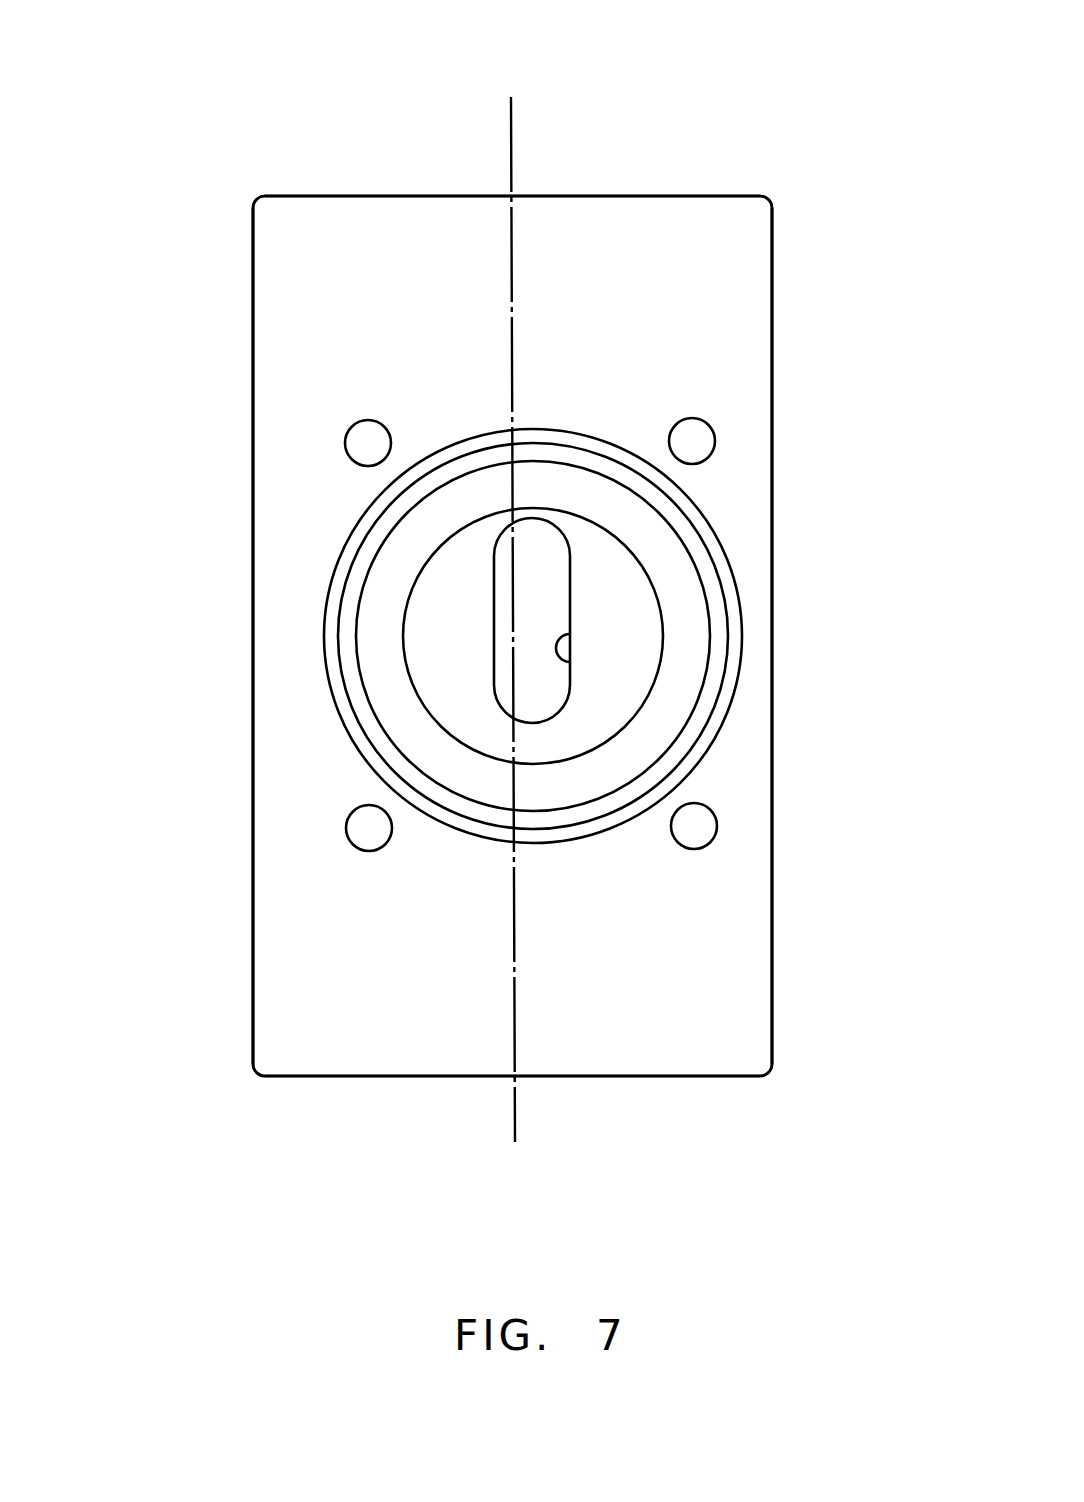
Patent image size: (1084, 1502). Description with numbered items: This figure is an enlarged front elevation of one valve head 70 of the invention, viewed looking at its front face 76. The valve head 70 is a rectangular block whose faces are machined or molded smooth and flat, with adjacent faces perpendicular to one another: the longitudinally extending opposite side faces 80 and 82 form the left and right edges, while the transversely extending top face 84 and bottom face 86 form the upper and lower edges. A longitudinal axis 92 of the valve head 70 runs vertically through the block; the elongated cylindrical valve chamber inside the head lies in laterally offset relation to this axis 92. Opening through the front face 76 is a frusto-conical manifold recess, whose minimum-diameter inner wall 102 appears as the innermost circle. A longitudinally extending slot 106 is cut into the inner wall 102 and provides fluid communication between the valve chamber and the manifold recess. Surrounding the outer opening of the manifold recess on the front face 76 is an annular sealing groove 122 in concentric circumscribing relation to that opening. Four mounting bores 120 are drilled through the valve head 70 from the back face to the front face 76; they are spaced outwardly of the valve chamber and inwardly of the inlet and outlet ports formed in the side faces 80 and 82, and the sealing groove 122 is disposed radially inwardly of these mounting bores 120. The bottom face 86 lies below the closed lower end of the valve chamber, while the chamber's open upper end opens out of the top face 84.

The valve head 70 is at (259, 198).
The front face 76 is at (615, 326).
The side face 80 is at (772, 492).
The side face 82 is at (253, 668).
The top face 84 is at (650, 195).
The bottom face 86 is at (615, 1076).
The longitudinal axis 92 is at (511, 105).
The inner wall 102 is at (480, 642).
The slot 106 is at (557, 660).
The mounting bores 120 is at (345, 425).
The annular sealing groove 122 is at (733, 613).